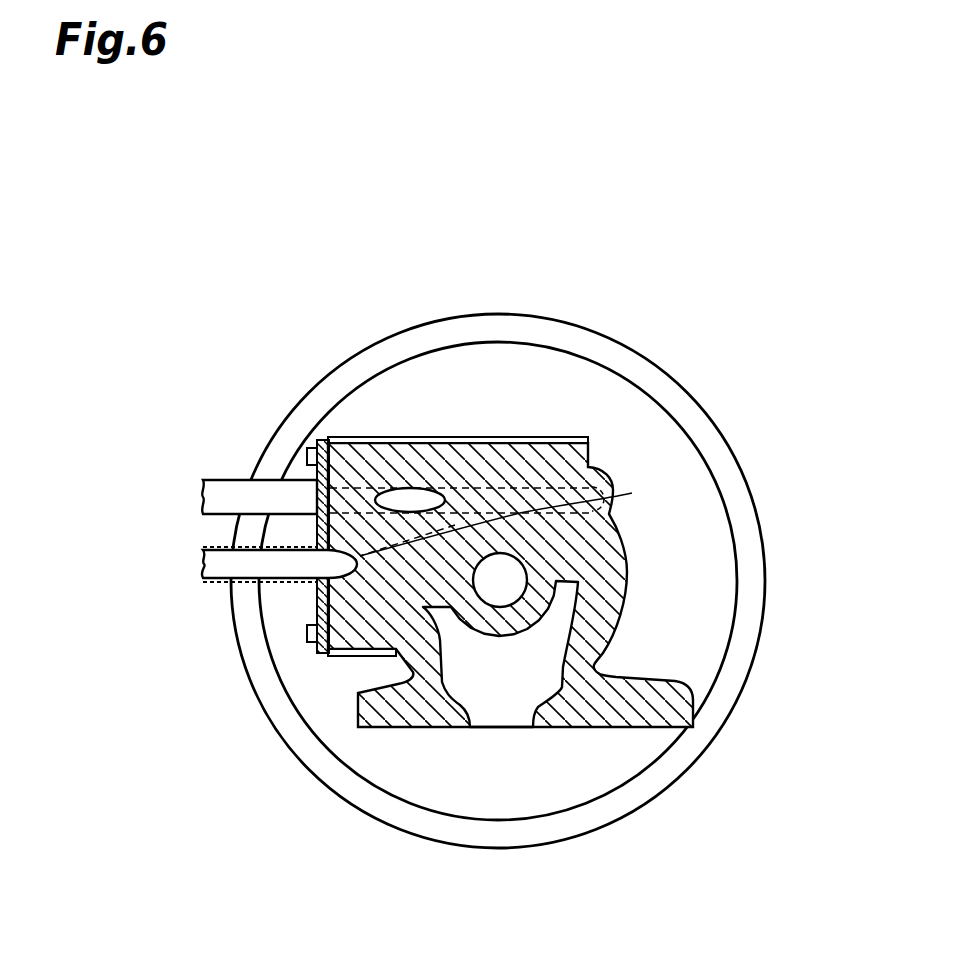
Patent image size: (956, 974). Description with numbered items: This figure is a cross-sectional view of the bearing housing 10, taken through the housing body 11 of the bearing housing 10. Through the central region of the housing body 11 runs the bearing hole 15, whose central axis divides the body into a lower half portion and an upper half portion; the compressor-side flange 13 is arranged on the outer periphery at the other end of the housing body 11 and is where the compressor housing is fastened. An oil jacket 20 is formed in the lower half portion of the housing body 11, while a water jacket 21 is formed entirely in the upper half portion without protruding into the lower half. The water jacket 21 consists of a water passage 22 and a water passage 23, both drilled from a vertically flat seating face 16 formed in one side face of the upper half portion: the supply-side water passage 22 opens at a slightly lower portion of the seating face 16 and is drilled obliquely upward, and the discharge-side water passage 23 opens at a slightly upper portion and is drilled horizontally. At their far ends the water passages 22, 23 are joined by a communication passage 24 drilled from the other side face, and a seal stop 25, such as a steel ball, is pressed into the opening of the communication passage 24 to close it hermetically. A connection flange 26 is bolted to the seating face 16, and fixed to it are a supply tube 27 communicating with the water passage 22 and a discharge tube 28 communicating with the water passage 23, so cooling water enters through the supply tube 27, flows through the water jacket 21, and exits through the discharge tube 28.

The bearing housing 10 is at (682, 376).
The housing body 11 is at (628, 573).
The compressor-side flange 13 is at (763, 645).
The bearing hole 15 is at (512, 554).
The seating face 16 is at (317, 604).
The oil jacket 20 is at (500, 668).
The water jacket 21 is at (375, 258).
The water passage 22 is at (455, 525).
The water passage 23 is at (411, 500).
The communication passage 24 is at (548, 440).
The seal stop 25 is at (625, 497).
The connection flange 26 is at (317, 475).
The supply tube 27 is at (213, 585).
The discharge tube 28 is at (213, 490).